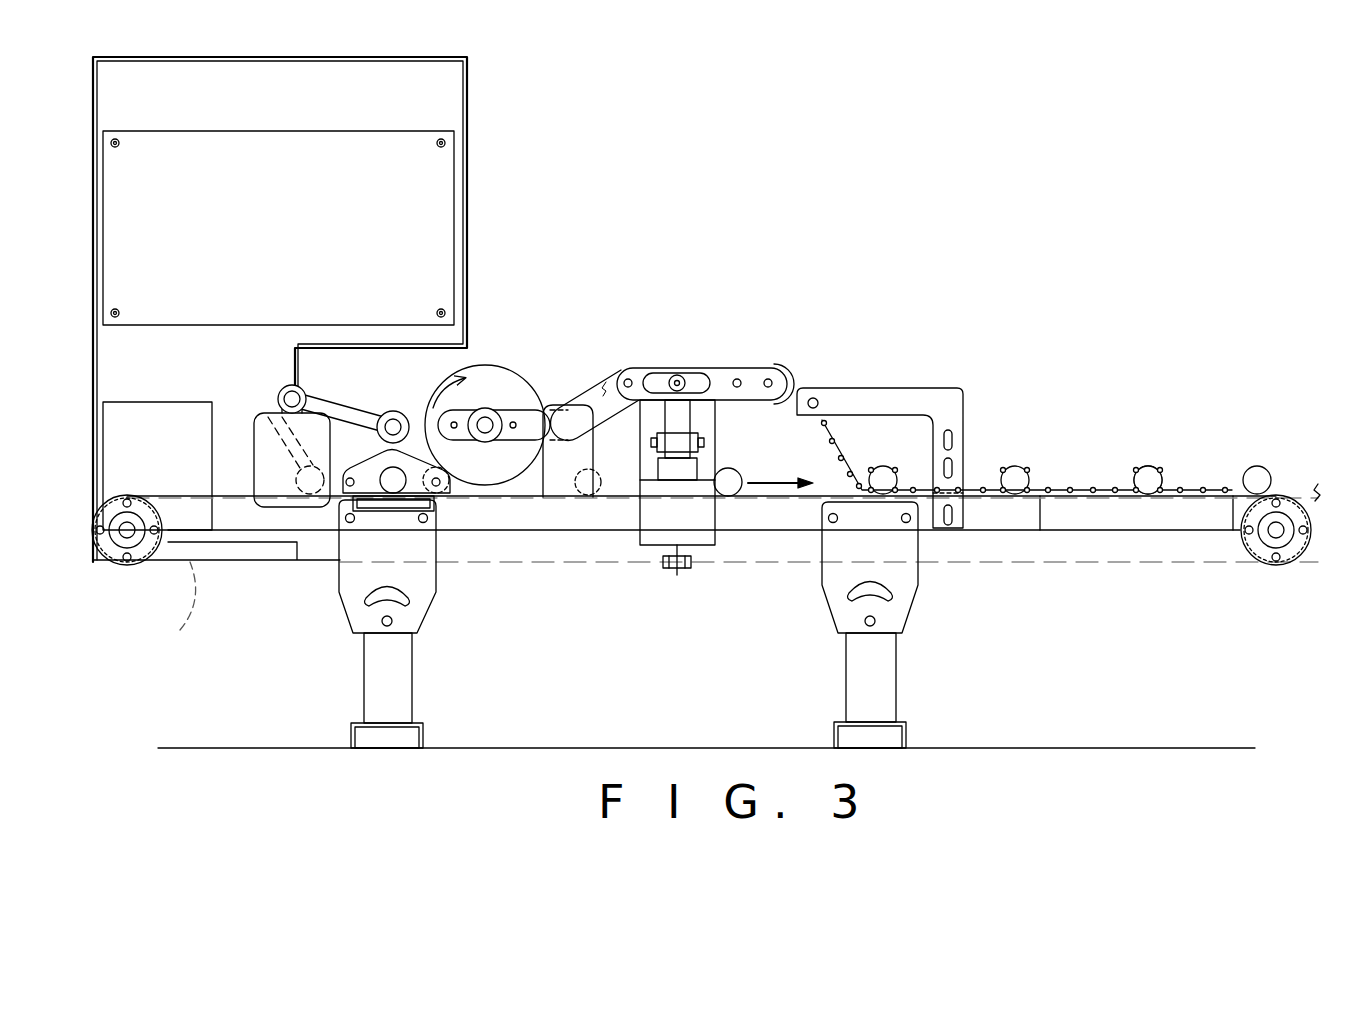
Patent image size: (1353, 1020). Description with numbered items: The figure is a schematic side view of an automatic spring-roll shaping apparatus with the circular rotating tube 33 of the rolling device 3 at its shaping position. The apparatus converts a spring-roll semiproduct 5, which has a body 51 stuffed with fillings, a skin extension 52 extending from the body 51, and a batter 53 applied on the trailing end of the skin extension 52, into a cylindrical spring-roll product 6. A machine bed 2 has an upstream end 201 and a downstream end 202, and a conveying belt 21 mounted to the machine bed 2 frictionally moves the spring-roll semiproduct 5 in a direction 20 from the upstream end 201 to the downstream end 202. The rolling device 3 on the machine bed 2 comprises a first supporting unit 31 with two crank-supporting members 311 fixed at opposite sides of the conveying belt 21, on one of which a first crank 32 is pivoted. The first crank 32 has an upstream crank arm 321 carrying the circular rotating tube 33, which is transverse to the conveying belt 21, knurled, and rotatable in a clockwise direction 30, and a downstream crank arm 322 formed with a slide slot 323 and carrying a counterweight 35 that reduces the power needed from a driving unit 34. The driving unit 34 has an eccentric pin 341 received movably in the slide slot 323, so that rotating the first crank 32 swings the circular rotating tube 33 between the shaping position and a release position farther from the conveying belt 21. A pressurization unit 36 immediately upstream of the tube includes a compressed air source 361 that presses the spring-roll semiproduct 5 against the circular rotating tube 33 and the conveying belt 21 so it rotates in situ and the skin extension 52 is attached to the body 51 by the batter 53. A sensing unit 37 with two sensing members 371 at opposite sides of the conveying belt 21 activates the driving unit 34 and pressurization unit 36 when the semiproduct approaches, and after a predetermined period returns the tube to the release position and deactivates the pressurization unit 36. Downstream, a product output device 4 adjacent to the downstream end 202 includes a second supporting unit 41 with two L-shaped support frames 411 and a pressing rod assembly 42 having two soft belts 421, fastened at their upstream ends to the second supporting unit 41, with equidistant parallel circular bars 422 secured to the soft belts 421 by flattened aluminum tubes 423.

The machine bed 2 is at (320, 640).
The direction 20 is at (770, 483).
The upstream end 201 is at (103, 572).
The downstream end 202 is at (1300, 572).
The conveying belt 21 is at (186, 617).
The rolling device 3 is at (655, 325).
The clockwise direction 30 is at (455, 392).
The first supporting unit 31 is at (600, 466).
The crank-supporting member 311 is at (583, 498).
The first crank 32 is at (605, 400).
The upstream crank arm 321 is at (527, 430).
The downstream crank arm 322 is at (735, 385).
The slide slot 323 is at (700, 390).
The circular rotating tube 33 is at (505, 415).
The driving unit 34 is at (705, 455).
The eccentric pin 341 is at (673, 380).
The counterweight 35 is at (786, 386).
The pressurization unit 36 is at (394, 410).
The compressed air source 361 is at (378, 412).
The sensing unit 37 is at (434, 560).
The sensing member 371 is at (395, 494).
The product output device 4 is at (939, 399).
The second supporting unit 41 is at (968, 398).
The L-shaped support frame 411 is at (942, 398).
The pressing rod assembly 42 is at (1027, 428).
The soft belt 421 is at (1155, 468).
The circular bar 422 is at (1136, 487).
The aluminum tube 423 is at (1137, 467).
The spring-roll semiproduct 5 is at (267, 487).
The body 51 is at (281, 408).
The skin extension 52 is at (262, 418).
The batter 53 is at (262, 438).
The spring-roll product 6 is at (446, 492).